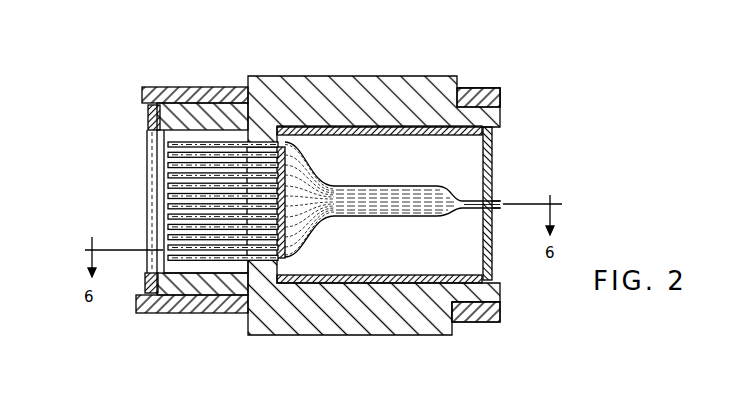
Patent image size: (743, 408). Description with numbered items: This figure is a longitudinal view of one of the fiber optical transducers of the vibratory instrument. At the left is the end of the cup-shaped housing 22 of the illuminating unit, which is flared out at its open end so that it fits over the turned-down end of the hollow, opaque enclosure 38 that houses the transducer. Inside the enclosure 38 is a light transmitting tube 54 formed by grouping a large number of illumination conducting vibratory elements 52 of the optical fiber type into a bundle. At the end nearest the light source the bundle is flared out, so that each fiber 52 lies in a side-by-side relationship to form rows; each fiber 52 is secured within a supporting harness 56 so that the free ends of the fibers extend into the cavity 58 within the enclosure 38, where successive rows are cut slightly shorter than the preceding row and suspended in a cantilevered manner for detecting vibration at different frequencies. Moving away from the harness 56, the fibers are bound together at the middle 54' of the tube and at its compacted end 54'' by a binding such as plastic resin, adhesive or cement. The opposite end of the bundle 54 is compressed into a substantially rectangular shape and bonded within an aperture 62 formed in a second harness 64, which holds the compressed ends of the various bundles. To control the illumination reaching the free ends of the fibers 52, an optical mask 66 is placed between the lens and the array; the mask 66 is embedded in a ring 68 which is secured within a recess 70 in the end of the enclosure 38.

The housing 22 is at (192, 188).
The enclosure 38 is at (388, 76).
The illumination conducting vibratory elements 52 is at (167, 194).
The light transmitting tube 54 is at (398, 213).
The middle of the tube 54' is at (309, 199).
The compacted end 54'' is at (473, 188).
The supporting harness 56 is at (294, 137).
The cavity 58 is at (206, 203).
The aperture 62 is at (500, 203).
The second harness 64 is at (492, 158).
The optical mask 66 is at (148, 168).
The ring 68 is at (145, 284).
The recess 70 is at (148, 114).